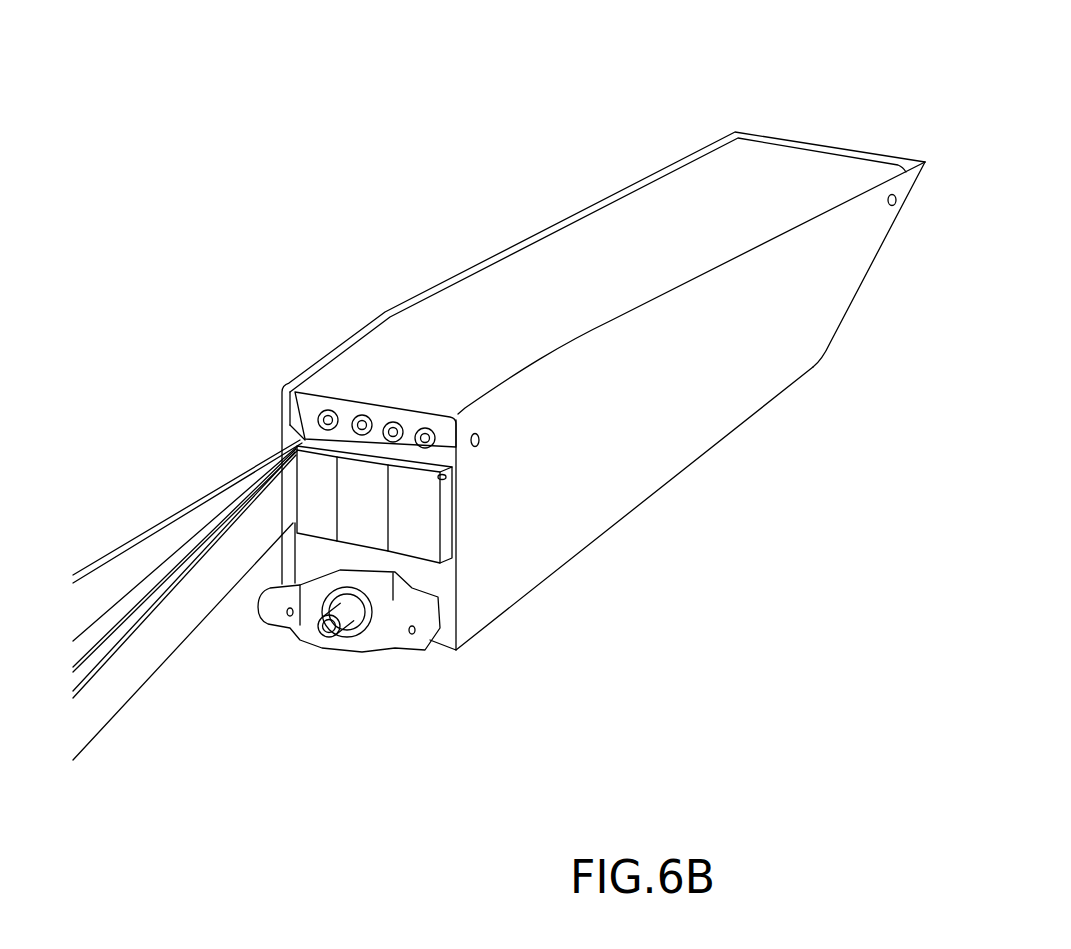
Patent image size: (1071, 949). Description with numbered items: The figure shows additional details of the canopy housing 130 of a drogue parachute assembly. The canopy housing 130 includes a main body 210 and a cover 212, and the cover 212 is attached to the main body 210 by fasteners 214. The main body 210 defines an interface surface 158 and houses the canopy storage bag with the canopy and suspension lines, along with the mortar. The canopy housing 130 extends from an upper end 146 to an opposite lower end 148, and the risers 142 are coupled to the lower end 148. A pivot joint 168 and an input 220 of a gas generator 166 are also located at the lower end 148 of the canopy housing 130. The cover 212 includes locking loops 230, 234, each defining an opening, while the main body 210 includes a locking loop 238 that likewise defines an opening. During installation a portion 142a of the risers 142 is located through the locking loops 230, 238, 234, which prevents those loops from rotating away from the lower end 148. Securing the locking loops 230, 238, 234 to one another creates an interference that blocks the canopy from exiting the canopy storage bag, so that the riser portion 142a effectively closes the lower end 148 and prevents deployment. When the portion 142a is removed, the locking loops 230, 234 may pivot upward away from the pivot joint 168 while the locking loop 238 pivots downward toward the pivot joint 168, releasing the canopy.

The canopy housing 130 is at (303, 172).
The upper end 146 is at (800, 140).
The cover 212 is at (641, 275).
The interface surface 158 is at (853, 305).
The main body 210 is at (639, 450).
The lower end 148 is at (450, 600).
The fasteners 214 is at (475, 433).
The locking loop 230 is at (332, 520).
The locking loop 238 is at (379, 531).
The locking loop 234 is at (426, 531).
The portion of risers 142a is at (445, 502).
The pivot joint 168 is at (402, 637).
The gas generator 166 is at (355, 633).
The input 220 is at (327, 633).
The risers 142 is at (130, 666).